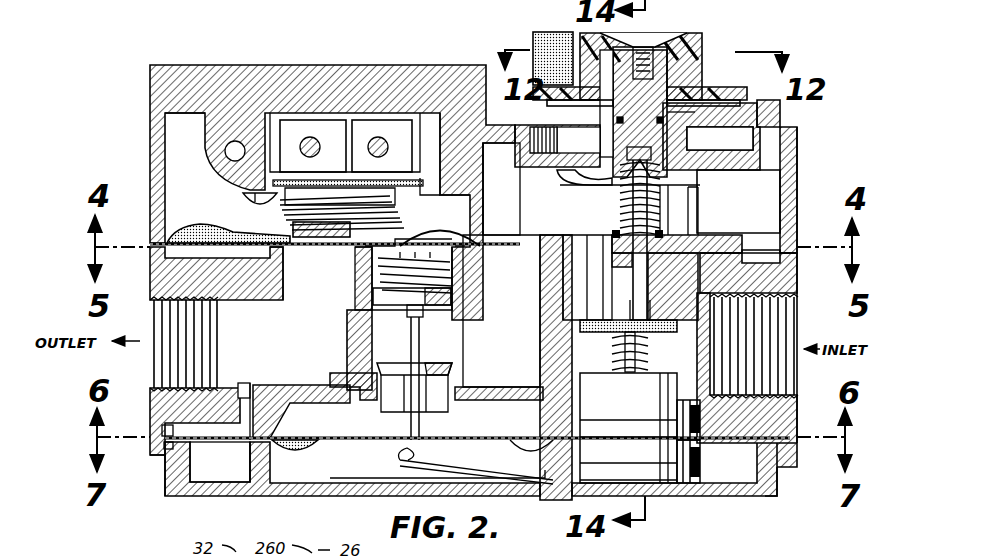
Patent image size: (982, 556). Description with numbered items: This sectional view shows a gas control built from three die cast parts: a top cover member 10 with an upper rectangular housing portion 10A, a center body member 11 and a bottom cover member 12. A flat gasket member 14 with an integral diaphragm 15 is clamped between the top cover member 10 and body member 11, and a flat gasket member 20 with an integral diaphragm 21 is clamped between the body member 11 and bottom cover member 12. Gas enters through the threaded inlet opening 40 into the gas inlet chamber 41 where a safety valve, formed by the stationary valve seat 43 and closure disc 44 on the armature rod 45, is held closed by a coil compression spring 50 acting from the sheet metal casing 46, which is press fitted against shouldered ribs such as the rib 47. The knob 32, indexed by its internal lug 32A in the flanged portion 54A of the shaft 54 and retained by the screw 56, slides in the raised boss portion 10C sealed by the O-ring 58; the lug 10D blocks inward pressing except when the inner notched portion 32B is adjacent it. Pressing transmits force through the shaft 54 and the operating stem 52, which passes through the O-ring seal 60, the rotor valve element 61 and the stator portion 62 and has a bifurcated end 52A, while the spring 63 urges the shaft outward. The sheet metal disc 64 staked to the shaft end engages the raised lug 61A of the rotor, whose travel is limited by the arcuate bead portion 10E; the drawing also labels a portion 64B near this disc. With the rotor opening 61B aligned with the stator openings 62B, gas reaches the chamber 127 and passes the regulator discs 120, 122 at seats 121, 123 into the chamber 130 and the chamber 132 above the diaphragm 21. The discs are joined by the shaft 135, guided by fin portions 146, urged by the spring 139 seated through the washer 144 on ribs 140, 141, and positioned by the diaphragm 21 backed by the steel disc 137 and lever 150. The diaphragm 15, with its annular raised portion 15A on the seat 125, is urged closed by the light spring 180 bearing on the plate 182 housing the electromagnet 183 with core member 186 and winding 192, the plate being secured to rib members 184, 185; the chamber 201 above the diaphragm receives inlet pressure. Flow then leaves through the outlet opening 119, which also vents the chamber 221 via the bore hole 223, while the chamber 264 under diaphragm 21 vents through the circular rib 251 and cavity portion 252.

The top cover member 10 is at (797, 166).
The upper rectangular housing portion 10A is at (152, 97).
The raised boss portion 10C is at (608, 132).
The lug 10D is at (705, 97).
The raised arcuate bead portion 10E is at (490, 232).
The center body member 11 is at (797, 273).
The bottom cover member 12 is at (778, 478).
The flat gasket member 14 is at (162, 247).
The diaphragm 15 is at (205, 228).
The annular raised portion 15A is at (275, 230).
The flat gasket member 20 is at (153, 448).
The diaphragm 21 is at (352, 438).
The knob 32 is at (702, 42).
The internal lug 32A is at (683, 36).
The inner notched portion 32B is at (545, 105).
The threaded inlet opening 40 is at (790, 316).
The gas inlet chamber 41 is at (682, 383).
The annular stationary valve seat 43 is at (695, 305).
The movable closure disc 44 is at (600, 322).
The armature rod 45 is at (635, 378).
The cylindrical sheet metal casing 46 is at (692, 455).
The circumferential rib 47 is at (700, 440).
The coil compression spring 50 is at (612, 355).
The operating stem 52 is at (648, 280).
The bifurcated end 52A is at (646, 309).
The slidable and rotatable shaft 54 is at (685, 72).
The flanged portion 54A is at (583, 35).
The screw 56 is at (645, 45).
The sealing O-ring 58 is at (672, 118).
The O-ring seal 60 is at (612, 232).
The rotor valve element 61 is at (710, 240).
The raised lug 61A is at (698, 208).
The rotor opening 61B is at (562, 250).
The stator portion 62 is at (740, 258).
The stator openings 62B is at (565, 293).
The coil compression spring 63 is at (660, 200).
The sheet metal disc 64 is at (622, 205).
The spring seat 64B is at (590, 185).
The outlet opening 119 is at (165, 325).
The valve disc 120 is at (350, 308).
The valve seat 121 is at (446, 305).
The valve disc 122 is at (385, 366).
The valve seat 123 is at (458, 387).
The valve seat 125 is at (285, 262).
The chamber 127 is at (465, 110).
The chamber 130 is at (436, 237).
The chamber 132 is at (512, 385).
The shaft 135 is at (410, 337).
The steel disc 137 is at (315, 448).
The coil compression spring 139 is at (455, 270).
The rib 140 is at (360, 266).
The rib 141 is at (478, 244).
The washer 144 is at (470, 230).
The fin portions 146 is at (372, 425).
The lever 150 is at (403, 468).
The light spring 180 is at (345, 217).
The plate 182 is at (345, 192).
The electromagnet 183 is at (291, 128).
The rib member 184 is at (250, 180).
The rib member 185 is at (432, 175).
The U-shaped stationary core member 186 is at (382, 139).
The winding 192 is at (395, 125).
The chamber 201 is at (172, 188).
The chamber 221 is at (195, 442).
The bore hole 223 is at (250, 395).
The circular rib 251 is at (262, 466).
The cavity portion 252 is at (170, 450).
The chamber 264 is at (330, 483).